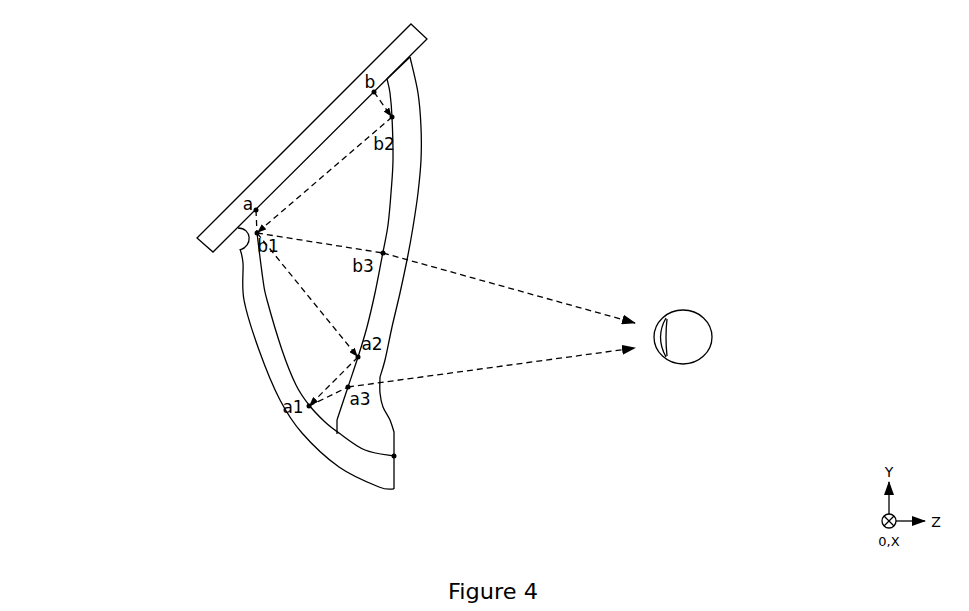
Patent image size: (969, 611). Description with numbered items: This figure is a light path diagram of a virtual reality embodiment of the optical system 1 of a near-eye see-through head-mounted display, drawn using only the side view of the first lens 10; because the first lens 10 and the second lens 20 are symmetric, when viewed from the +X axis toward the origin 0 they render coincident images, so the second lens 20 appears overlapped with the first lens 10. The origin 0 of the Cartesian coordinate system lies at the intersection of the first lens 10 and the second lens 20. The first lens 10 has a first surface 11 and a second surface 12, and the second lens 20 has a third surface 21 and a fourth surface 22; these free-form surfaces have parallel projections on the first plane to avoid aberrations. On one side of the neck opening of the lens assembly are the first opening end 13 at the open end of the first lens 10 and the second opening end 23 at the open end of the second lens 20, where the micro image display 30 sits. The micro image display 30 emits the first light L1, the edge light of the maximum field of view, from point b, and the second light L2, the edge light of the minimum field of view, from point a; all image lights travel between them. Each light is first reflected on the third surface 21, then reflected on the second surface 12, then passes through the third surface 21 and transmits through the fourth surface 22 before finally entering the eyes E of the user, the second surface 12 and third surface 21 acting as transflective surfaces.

The optical system of near-eye see-through head-mounted display 1 is at (140, 96).
The first lens 10 is at (280, 358).
The first surface 11 is at (237, 262).
The second surface 12 is at (265, 292).
The first opening end 13 is at (240, 246).
The second lens 20 is at (411, 256).
The third surface 21 is at (393, 163).
The fourth surface 22 is at (422, 137).
The second opening end 23 is at (401, 66).
The micro image display 30 is at (405, 42).
The origin of coordinate axis 0 is at (394, 456).
The first light L1 is at (500, 290).
The second light L2 is at (507, 362).
The eyes E is at (707, 320).